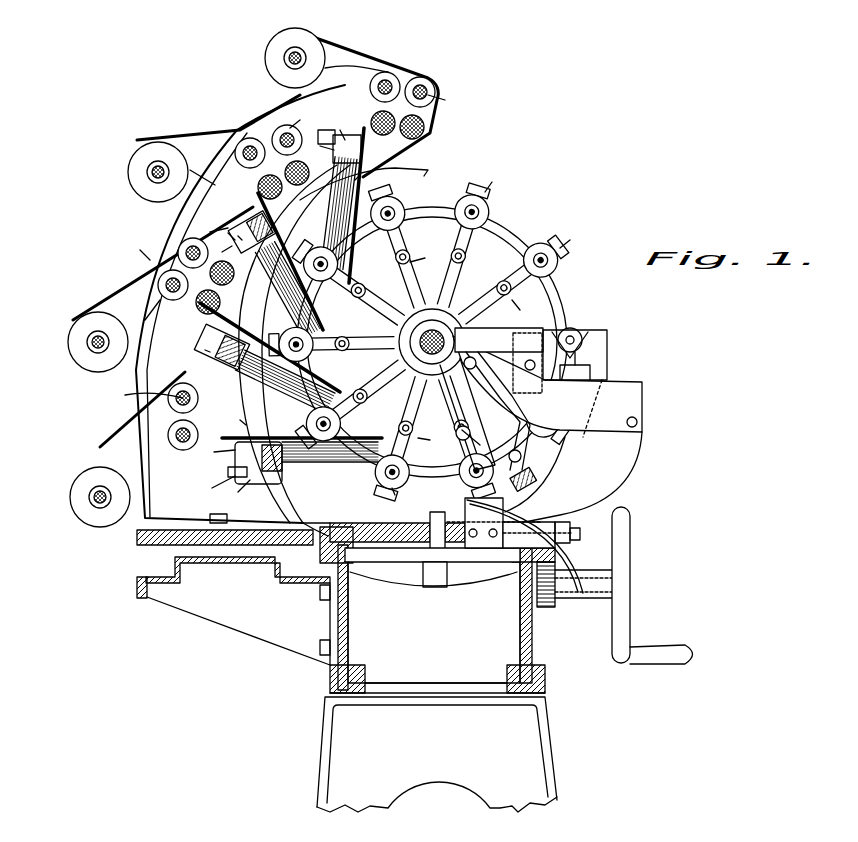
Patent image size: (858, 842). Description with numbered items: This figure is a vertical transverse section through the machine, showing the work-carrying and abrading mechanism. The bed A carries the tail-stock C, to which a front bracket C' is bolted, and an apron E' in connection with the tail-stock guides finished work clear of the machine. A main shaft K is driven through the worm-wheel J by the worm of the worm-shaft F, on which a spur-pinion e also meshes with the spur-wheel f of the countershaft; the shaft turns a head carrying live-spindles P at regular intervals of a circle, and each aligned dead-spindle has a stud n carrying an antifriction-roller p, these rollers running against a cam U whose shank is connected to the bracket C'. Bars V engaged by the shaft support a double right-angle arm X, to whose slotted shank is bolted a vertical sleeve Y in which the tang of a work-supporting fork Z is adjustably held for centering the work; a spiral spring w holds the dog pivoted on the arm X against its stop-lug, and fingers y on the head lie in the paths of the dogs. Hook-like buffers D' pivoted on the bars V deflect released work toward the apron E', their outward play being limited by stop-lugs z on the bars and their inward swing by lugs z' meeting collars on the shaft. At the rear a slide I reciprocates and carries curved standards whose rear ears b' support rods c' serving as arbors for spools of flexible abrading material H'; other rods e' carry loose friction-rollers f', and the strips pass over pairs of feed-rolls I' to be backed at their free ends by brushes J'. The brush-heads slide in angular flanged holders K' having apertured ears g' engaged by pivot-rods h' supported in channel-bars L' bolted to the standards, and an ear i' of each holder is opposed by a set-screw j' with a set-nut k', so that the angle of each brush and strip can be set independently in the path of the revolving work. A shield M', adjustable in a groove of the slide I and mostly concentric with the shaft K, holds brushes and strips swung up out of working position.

The bed A is at (350, 618).
The worm-shaft F is at (215, 565).
The slide I is at (209, 541).
The tail-stock C is at (326, 507).
The front bracket C' is at (476, 484).
The apron E' is at (570, 581).
The flexible abrading material H' is at (267, 273).
The rear ears b' is at (230, 283).
The rods c' is at (182, 277).
The rods e' is at (297, 252).
The spur-pinion e is at (182, 274).
The spur-wheel f is at (145, 281).
The loose rollers f' is at (286, 245).
The feed-rolls I' is at (330, 271).
The brush-holders K' is at (315, 317).
The shield M' is at (388, 173).
The channel-bars L' is at (277, 307).
The set-screw j' is at (269, 291).
The ear i' is at (230, 376).
The set-nut k' is at (272, 310).
The apertured ears g' is at (217, 452).
The pivot-rods h' is at (304, 301).
The worm-wheel J is at (432, 354).
The brushes J' is at (318, 344).
The fingers y is at (469, 345).
The live-spindles P is at (492, 205).
The antifriction-roller p is at (560, 258).
The stud n is at (487, 333).
The main shaft K is at (441, 323).
The bars V is at (547, 386).
The lugs z' is at (499, 340).
The stop-lugs z is at (500, 414).
The double right-angle arm X is at (527, 351).
The work-supporting fork Z is at (575, 330).
The vertical sleeve Y is at (607, 358).
The spiral spring w is at (590, 352).
The cam U is at (540, 462).
The hook-like buffers D' is at (520, 435).